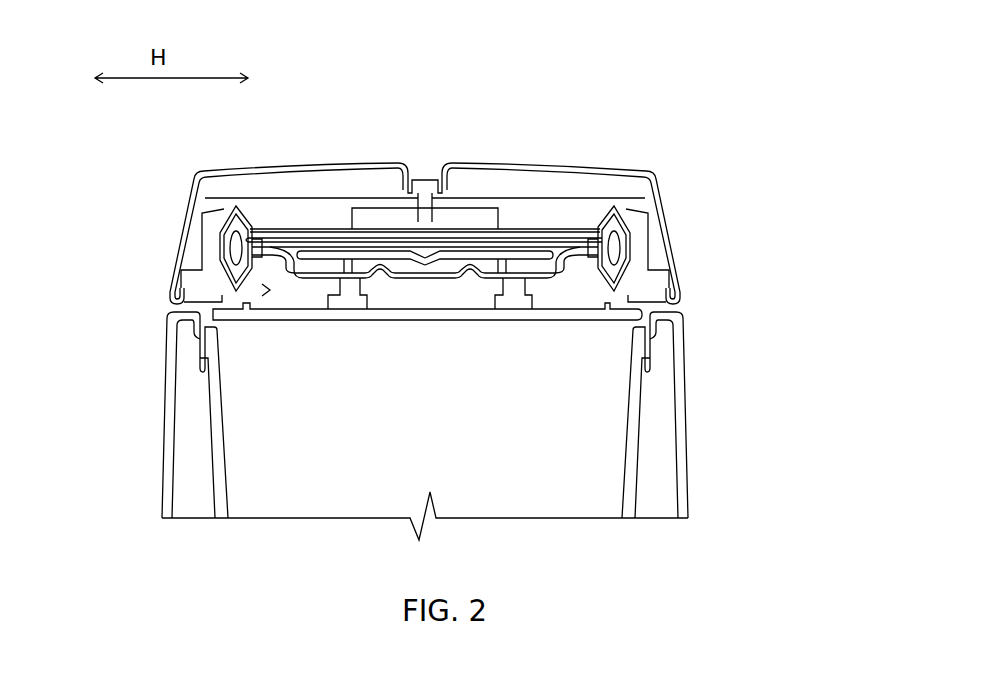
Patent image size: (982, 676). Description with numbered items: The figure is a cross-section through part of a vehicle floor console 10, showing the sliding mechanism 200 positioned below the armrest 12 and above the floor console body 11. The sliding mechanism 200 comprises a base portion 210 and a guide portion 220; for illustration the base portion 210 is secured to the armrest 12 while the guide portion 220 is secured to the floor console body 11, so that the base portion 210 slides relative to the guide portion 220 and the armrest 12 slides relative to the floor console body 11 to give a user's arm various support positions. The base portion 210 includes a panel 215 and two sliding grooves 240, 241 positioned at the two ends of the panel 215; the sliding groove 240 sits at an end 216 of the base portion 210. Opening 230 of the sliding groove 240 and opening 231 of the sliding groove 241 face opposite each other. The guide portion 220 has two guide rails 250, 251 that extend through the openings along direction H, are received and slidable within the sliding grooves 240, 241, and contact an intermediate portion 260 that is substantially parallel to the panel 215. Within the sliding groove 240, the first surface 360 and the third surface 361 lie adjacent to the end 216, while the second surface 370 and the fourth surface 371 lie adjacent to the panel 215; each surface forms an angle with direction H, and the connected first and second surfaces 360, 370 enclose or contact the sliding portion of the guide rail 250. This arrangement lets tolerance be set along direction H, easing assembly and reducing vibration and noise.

The vehicle floor console 10 is at (701, 146).
The floor console body 11 is at (667, 440).
The armrest 12 is at (470, 183).
The sliding mechanism 200 is at (565, 207).
The base portion 210 is at (393, 190).
The panel 215 is at (467, 232).
The end of the base portion 216 is at (221, 220).
The guide portion 220 is at (315, 292).
The opening 230 is at (300, 263).
The opening 231 is at (625, 260).
The sliding groove 240 is at (226, 250).
The sliding groove 241 is at (620, 246).
The guide rail 250 is at (236, 213).
The guide rail 251 is at (603, 225).
The intermediate portion 260 is at (452, 278).
The first surface 360 is at (194, 183).
The third surface 361 is at (243, 275).
The second surface 370 is at (334, 219).
The fourth surface 371 is at (270, 288).